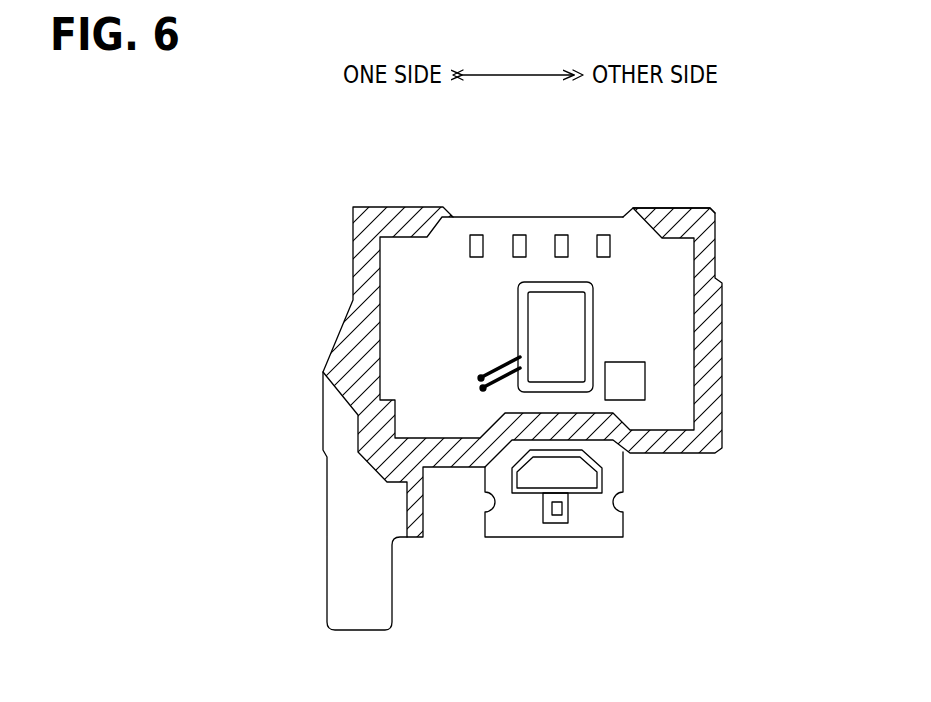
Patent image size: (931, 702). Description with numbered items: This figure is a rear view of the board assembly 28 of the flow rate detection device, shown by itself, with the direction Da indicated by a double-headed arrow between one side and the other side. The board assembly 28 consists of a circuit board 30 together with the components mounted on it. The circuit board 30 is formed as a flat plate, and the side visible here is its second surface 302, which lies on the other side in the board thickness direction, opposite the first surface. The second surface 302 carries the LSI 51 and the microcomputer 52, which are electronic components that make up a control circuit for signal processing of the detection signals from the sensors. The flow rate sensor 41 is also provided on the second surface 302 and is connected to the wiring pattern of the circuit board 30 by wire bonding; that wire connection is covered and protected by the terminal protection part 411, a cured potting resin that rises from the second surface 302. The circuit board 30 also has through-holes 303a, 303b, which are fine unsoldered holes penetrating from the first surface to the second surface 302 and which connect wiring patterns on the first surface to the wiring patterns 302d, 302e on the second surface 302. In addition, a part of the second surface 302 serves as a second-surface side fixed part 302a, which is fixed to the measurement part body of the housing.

The board assembly 28 is at (700, 180).
The circuit board 30 is at (320, 411).
The second surface 302 is at (338, 443).
The second-surface side fixed part 302a is at (715, 240).
The wiring pattern 302d is at (503, 362).
The wiring pattern 302e is at (503, 362).
The through-hole 303a is at (482, 390).
The through-hole 303b is at (480, 376).
The LSI 51 is at (573, 307).
The microcomputer 52 is at (628, 382).
The flow rate sensor 41 is at (556, 515).
The terminal protection part 411 is at (577, 480).
The axial direction Da is at (522, 73).